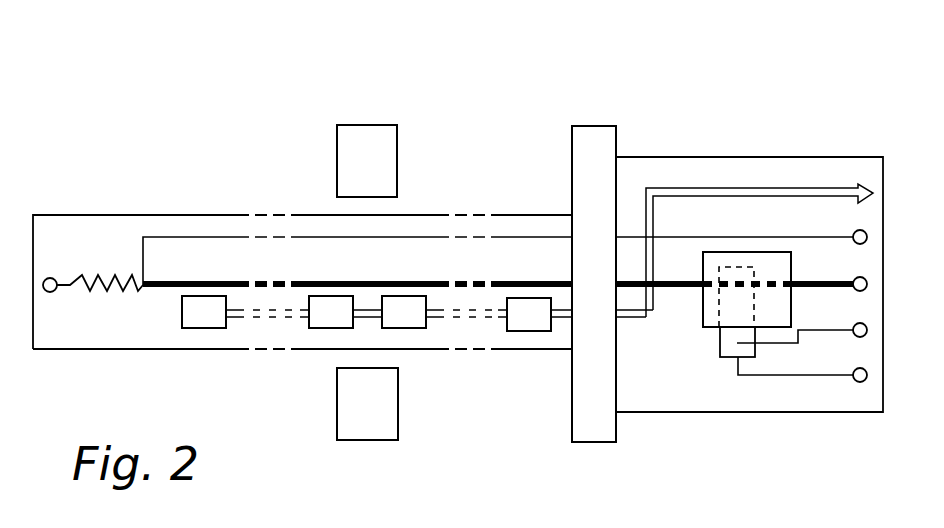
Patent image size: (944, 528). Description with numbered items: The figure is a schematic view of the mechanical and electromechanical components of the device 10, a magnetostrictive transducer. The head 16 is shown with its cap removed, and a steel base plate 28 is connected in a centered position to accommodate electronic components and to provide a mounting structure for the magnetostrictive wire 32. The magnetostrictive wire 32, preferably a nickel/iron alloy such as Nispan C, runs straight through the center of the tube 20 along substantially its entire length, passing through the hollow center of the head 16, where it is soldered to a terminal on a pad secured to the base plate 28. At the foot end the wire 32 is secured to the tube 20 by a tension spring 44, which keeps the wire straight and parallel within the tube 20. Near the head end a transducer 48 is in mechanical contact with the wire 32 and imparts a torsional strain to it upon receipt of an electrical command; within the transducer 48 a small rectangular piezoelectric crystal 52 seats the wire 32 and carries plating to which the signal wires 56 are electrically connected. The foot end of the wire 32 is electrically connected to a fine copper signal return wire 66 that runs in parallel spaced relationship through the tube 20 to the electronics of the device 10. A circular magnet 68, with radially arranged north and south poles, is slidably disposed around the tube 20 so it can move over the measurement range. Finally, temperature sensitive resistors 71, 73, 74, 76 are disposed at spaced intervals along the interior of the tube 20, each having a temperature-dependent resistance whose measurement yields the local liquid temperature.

The device 10 is at (248, 110).
The head 16 is at (880, 103).
The tube 20 is at (302, 261).
The base plate 28 is at (712, 412).
The magnetostrictive wire 32 is at (377, 281).
The tension spring 44 is at (82, 275).
The transducer 48 is at (703, 270).
The piezoelectric crystal 52 is at (720, 345).
The signal wires 56 is at (798, 330).
The signal return wire 66 is at (143, 250).
The magnet 68 is at (337, 138).
The temperature sensitive resistor 71 is at (245, 312).
The temperature sensitive resistor 73 is at (345, 312).
The temperature sensitive resistor 74 is at (444, 312).
The temperature sensitive resistor 76 is at (580, 314).